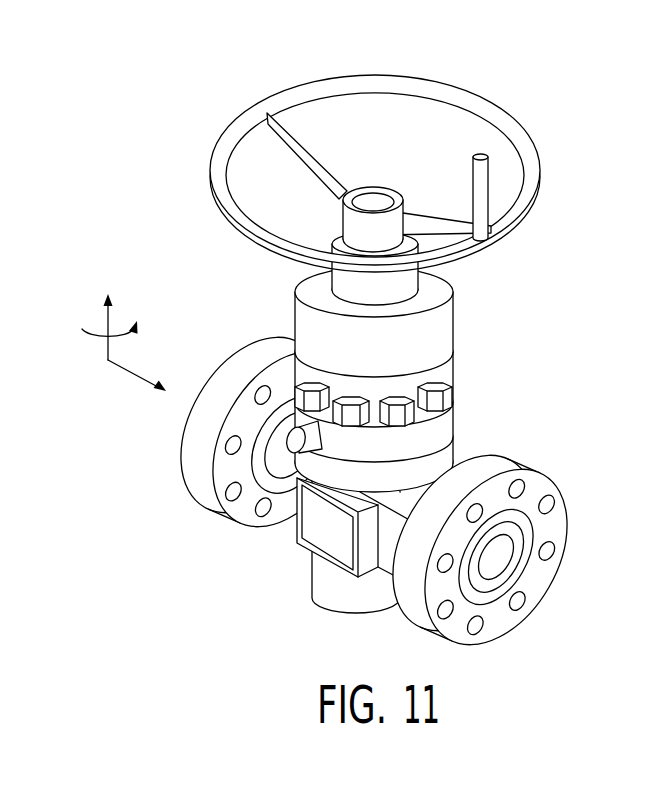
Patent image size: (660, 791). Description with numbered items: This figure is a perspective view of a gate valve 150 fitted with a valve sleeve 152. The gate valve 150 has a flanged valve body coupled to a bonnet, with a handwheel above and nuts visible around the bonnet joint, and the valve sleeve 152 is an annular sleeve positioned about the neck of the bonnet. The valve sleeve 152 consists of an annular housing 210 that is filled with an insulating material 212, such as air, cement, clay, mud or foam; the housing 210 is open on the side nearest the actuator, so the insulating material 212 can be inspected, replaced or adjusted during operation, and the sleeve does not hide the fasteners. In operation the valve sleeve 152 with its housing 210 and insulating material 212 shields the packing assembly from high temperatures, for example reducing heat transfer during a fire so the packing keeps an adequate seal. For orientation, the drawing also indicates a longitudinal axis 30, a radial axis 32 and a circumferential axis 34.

The gate valve 150 is at (389, 366).
The valve sleeve 152 is at (435, 329).
The housing 210 is at (441, 358).
The insulating material 212 is at (444, 283).
The longitudinal axis 30 is at (107, 320).
The radial axis 32 is at (128, 377).
The circumferential axis 34 is at (98, 346).